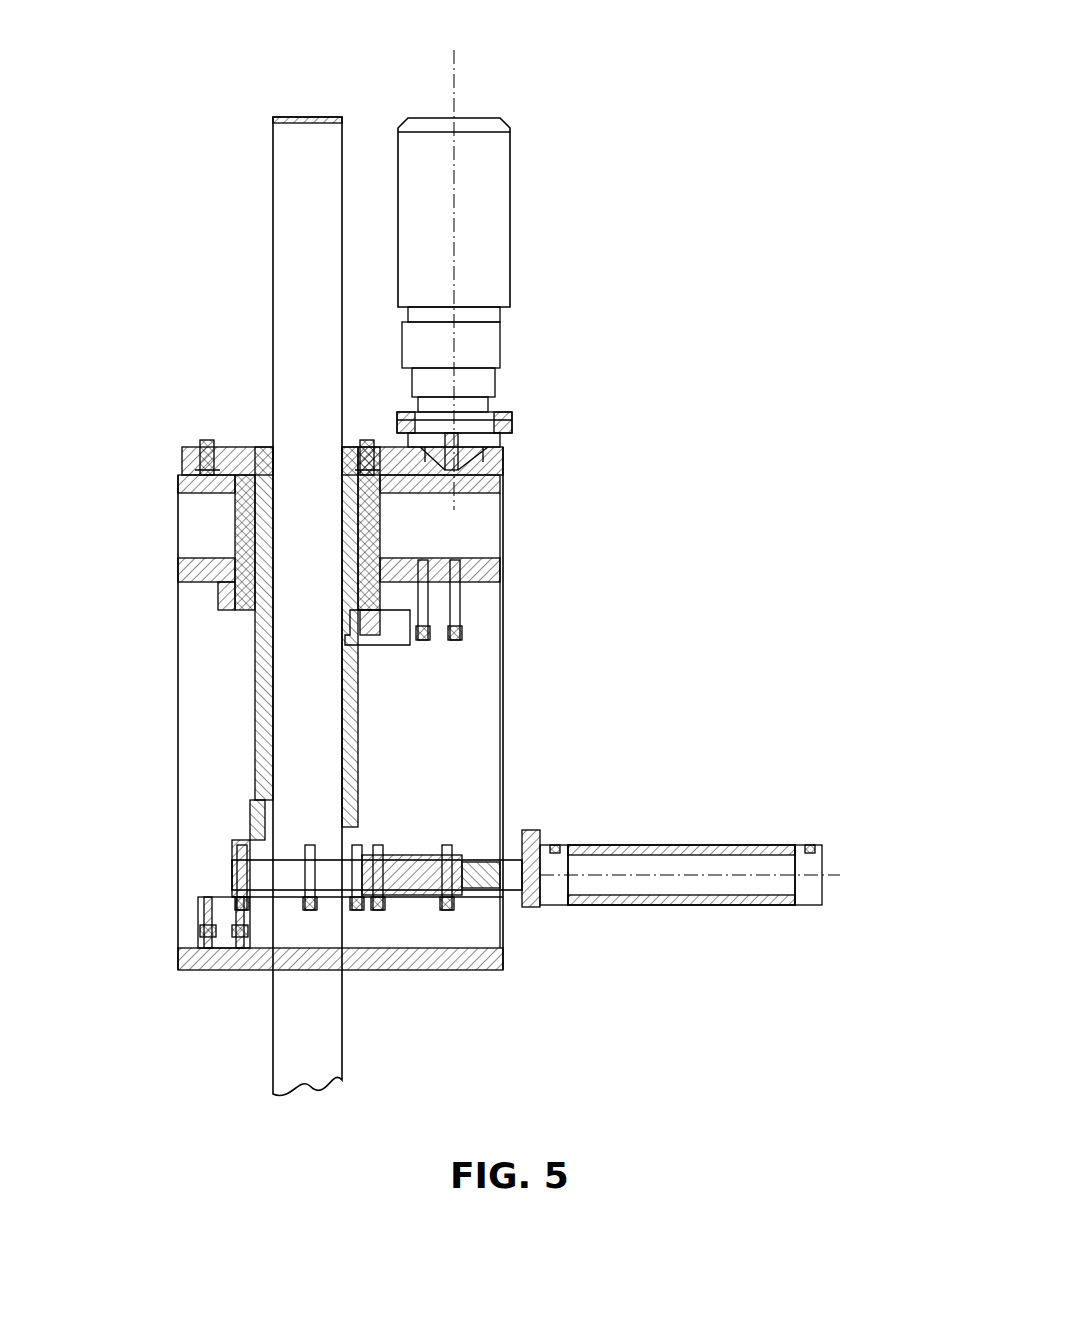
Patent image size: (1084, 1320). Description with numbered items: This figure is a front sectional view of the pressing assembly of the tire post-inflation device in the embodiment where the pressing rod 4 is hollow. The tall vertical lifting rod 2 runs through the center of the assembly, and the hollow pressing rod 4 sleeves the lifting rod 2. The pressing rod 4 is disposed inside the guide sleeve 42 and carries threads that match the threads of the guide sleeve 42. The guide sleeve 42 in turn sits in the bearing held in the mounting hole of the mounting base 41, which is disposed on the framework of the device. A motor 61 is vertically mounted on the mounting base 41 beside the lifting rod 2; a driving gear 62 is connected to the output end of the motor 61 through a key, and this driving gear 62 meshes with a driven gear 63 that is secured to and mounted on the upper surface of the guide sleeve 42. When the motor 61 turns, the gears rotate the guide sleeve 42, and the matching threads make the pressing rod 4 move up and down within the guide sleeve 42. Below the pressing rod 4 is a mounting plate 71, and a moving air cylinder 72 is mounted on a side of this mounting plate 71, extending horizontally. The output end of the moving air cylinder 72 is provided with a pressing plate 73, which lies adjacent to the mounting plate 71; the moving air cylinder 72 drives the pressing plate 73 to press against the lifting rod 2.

The lifting rod 2 is at (305, 227).
The pressing rod 4 is at (265, 476).
The mounting base 41 is at (213, 805).
The guide sleeve 42 is at (232, 608).
The motor 61 is at (478, 178).
The driving gear 62 is at (478, 452).
The driven gear 63 is at (180, 465).
The mounting plate 71 is at (372, 843).
The moving air cylinder 72 is at (625, 863).
The pressing plate 73 is at (422, 877).